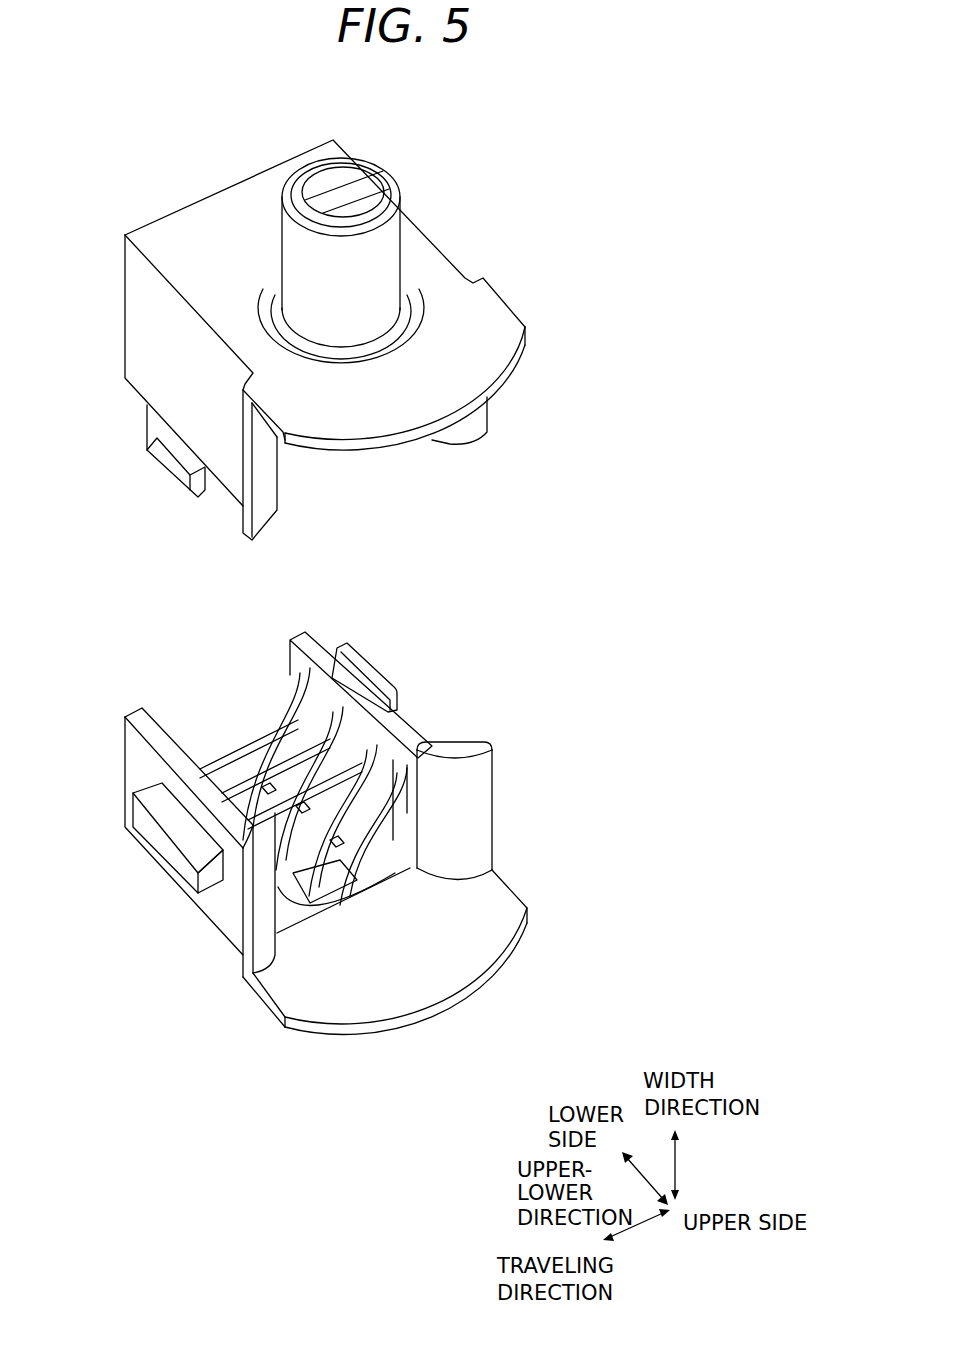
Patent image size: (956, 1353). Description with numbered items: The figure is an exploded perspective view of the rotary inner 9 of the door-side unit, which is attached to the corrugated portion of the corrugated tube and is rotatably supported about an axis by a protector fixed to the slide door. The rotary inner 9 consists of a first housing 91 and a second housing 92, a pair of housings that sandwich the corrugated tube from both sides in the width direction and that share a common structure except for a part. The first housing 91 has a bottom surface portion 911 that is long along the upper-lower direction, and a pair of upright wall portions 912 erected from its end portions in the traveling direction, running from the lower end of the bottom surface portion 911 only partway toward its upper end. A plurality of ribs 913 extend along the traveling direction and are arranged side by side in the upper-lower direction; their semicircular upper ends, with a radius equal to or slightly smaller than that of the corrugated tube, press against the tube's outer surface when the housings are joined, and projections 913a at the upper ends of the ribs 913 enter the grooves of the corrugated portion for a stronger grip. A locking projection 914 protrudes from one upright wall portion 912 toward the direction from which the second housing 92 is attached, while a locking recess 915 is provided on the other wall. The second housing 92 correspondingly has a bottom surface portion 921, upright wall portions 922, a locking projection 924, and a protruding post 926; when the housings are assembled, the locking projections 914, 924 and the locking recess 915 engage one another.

The rotary inner 9 is at (473, 1230).
The first housing 91 is at (465, 704).
The bottom surface portion 911 is at (462, 952).
The upright wall portions 912 is at (305, 637).
The ribs 913 is at (288, 747).
The projections 913a is at (240, 793).
The locking projection 914 is at (378, 668).
The locking recess 915 is at (163, 847).
The second housing 92 is at (473, 242).
The bottom surface portion 921 is at (240, 210).
The upright wall portions 922 is at (150, 328).
The locking projection 924 is at (160, 467).
The protruding post 926 is at (396, 190).